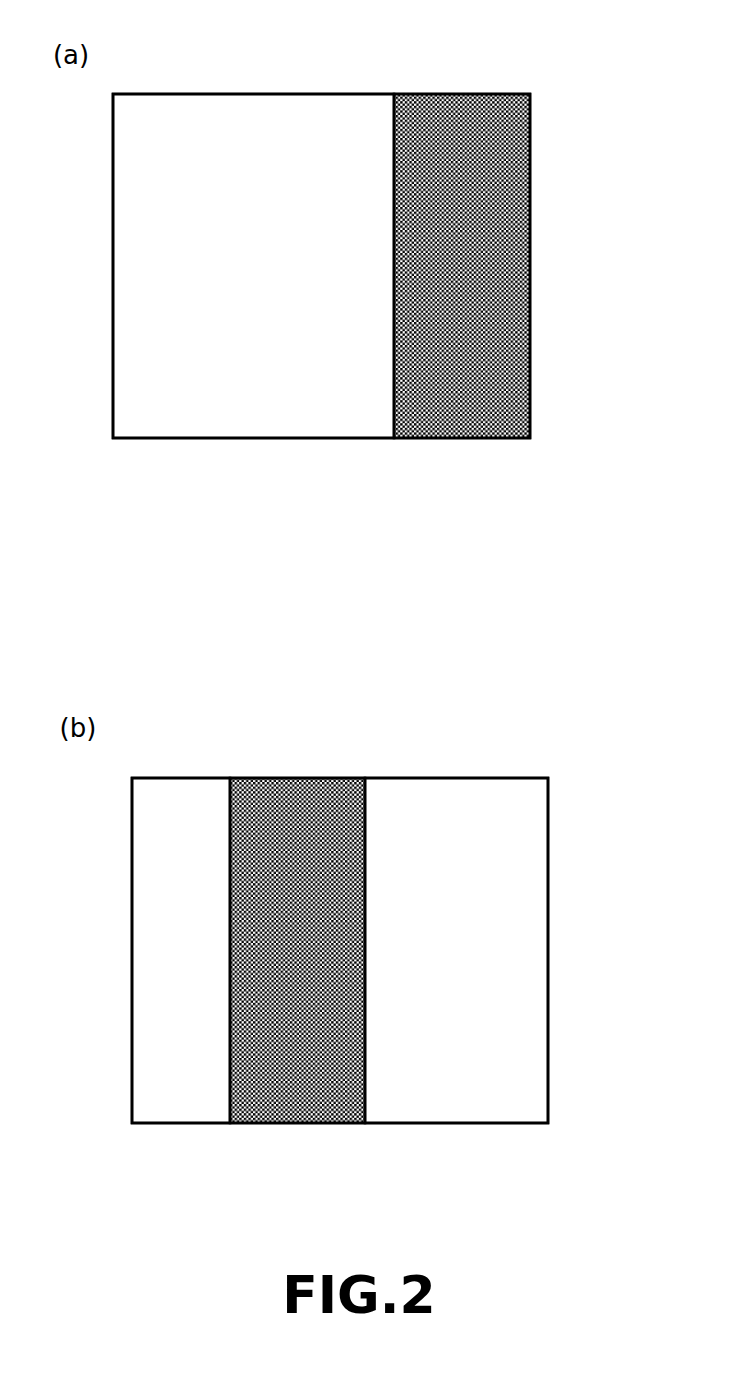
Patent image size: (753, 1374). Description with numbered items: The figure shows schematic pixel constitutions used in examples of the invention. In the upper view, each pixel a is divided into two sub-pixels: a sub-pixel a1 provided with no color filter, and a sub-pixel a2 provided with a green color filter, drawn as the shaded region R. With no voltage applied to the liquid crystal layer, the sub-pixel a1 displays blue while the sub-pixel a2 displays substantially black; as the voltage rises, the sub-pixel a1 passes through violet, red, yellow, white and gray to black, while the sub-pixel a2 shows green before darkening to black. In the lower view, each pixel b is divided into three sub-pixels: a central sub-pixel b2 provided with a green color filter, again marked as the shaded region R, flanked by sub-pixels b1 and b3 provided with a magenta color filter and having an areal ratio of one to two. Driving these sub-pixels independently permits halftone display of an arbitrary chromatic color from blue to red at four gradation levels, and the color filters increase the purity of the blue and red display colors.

The pixel a is at (534, 308).
The sub-pixel a1 is at (237, 93).
The sub-pixel a2 is at (443, 93).
The pixel b is at (552, 960).
The sub-pixel b1 is at (172, 777).
The sub-pixel b2 is at (282, 777).
The sub-pixel b3 is at (433, 777).
The region R (shaded region) R is at (473, 415).